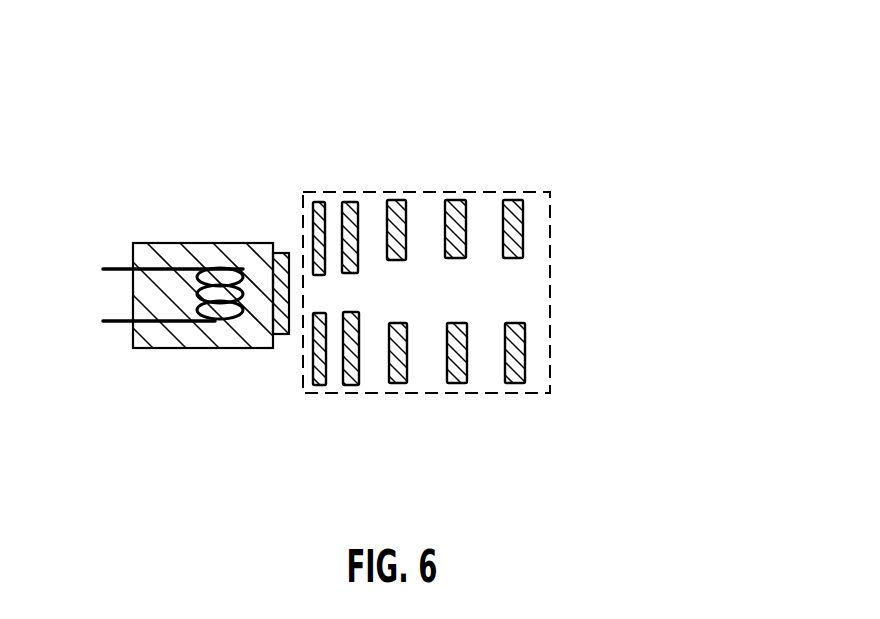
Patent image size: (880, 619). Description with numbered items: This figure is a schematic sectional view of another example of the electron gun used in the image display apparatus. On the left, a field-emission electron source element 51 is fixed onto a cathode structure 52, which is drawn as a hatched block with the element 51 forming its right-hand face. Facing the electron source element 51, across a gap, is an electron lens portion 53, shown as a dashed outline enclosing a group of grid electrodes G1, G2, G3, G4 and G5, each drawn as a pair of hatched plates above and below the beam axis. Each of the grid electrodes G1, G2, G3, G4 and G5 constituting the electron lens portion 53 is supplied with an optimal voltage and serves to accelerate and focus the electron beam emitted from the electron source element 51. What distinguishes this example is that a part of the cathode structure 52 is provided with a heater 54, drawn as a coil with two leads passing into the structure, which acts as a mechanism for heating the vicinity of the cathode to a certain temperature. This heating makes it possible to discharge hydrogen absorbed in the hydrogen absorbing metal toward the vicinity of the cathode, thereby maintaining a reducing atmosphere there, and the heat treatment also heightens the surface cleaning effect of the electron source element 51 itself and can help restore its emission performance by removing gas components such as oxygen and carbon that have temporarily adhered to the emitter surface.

The field-emission electron source element 51 is at (278, 253).
The cathode structure 52 is at (193, 243).
The electron lens portion 53 is at (423, 190).
The heater 54 is at (124, 269).
The grid electrode G1 is at (319, 385).
The grid electrode G2 is at (350, 385).
The grid electrode G3 is at (397, 383).
The grid electrode G4 is at (457, 383).
The grid electrode G5 is at (515, 383).